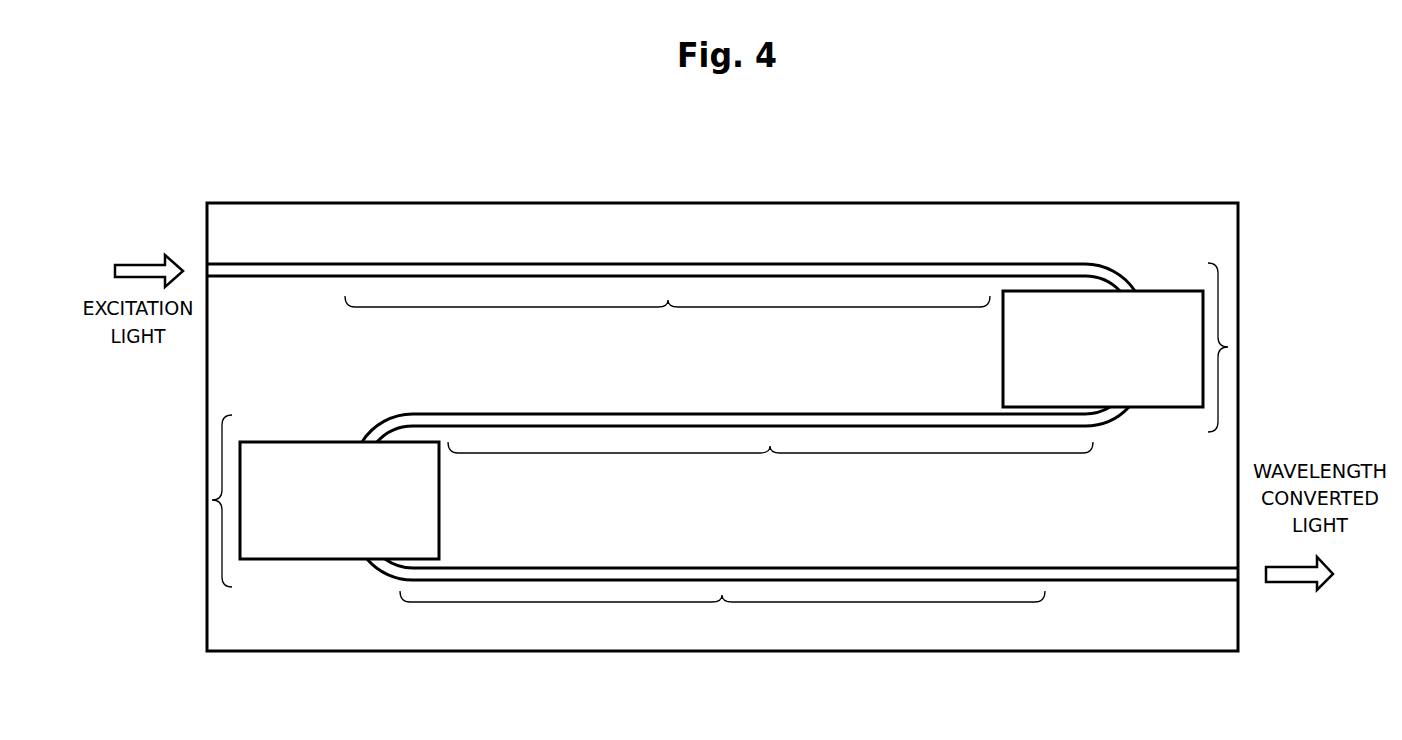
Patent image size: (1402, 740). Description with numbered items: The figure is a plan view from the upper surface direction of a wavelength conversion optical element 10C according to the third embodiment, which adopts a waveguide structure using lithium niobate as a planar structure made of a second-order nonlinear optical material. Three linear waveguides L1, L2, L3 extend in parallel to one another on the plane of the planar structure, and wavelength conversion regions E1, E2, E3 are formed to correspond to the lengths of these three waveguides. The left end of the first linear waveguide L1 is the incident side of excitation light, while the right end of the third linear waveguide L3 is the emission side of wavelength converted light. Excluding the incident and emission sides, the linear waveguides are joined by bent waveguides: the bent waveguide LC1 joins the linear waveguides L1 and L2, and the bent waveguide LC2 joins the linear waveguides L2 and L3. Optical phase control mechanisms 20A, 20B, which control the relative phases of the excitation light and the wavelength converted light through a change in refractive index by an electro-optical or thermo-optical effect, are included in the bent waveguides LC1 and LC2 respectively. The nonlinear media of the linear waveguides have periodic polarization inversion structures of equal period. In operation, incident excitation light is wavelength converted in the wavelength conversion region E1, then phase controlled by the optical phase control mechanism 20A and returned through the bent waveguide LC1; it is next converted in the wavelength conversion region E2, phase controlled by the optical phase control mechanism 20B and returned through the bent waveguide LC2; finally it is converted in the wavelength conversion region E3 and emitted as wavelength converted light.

The wavelength conversion optical element 10C is at (723, 202).
The first linear waveguide L1 is at (845, 262).
The second linear waveguide L2 is at (848, 412).
The third linear waveguide L3 is at (848, 566).
The wavelength conversion region E1 is at (667, 322).
The wavelength conversion region E2 is at (770, 468).
The wavelength conversion region E3 is at (722, 617).
The optical phase control mechanism 20A is at (1170, 290).
The optical phase control mechanism 20B is at (293, 441).
The bent waveguide LC1 is at (1228, 347).
The bent waveguide LC2 is at (212, 500).